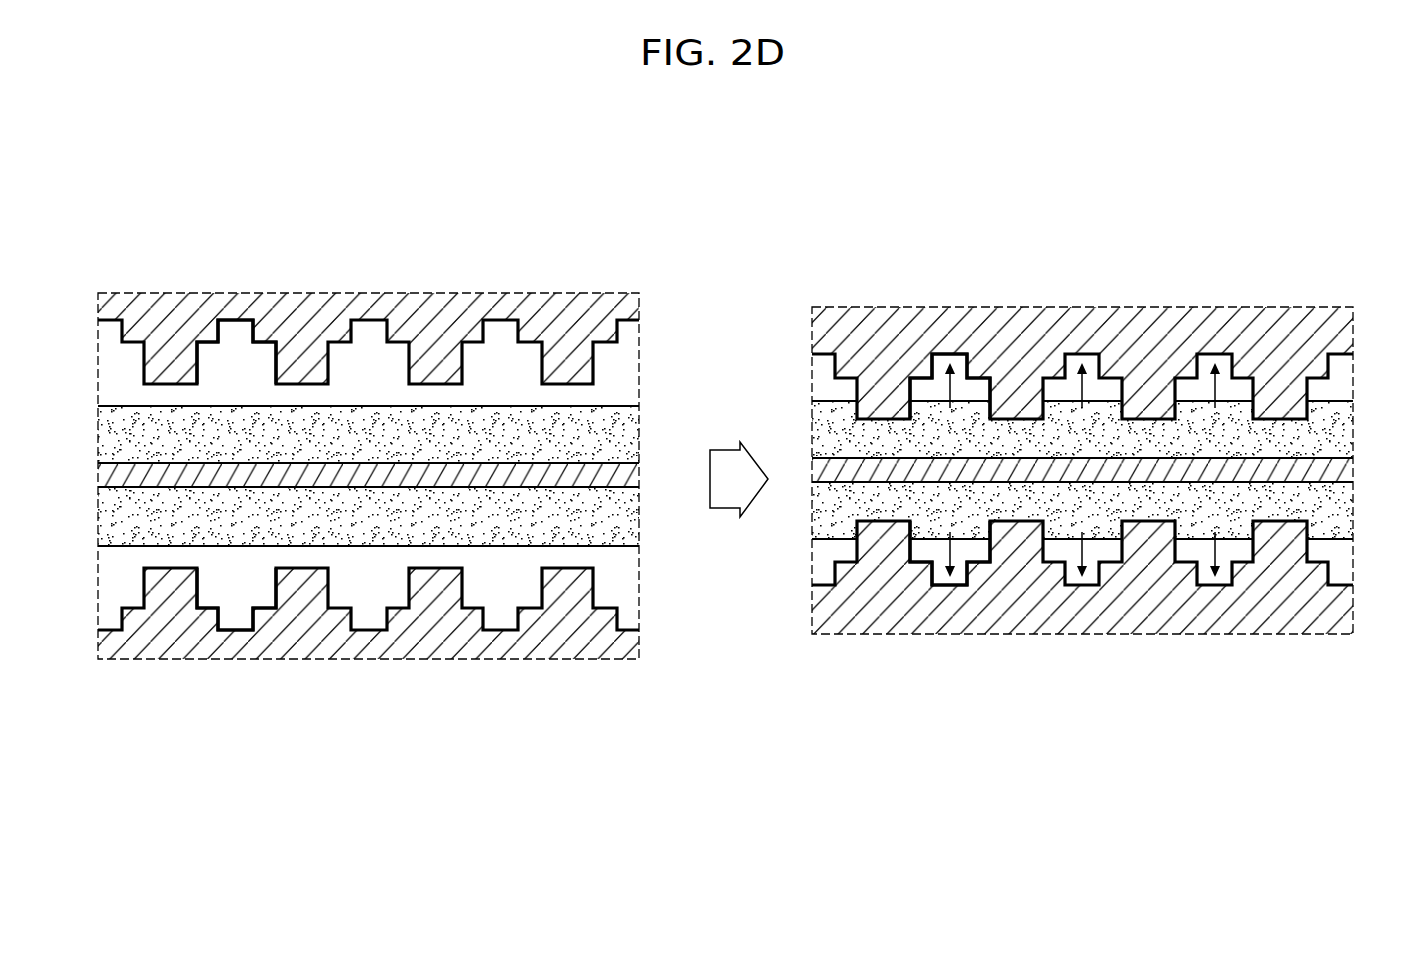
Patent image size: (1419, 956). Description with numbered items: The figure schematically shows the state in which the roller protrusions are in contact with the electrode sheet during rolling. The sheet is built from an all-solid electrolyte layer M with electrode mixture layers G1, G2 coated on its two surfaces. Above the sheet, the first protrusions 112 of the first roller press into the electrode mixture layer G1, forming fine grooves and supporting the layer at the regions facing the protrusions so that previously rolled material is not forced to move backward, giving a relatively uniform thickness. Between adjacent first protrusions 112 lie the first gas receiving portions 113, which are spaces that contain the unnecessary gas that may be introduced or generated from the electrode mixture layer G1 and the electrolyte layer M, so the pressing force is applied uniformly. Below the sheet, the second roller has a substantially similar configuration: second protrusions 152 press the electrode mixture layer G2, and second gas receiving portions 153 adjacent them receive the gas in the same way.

The first protrusion 112 is at (127, 377).
The first gas receiving portion 113 is at (238, 335).
The second protrusion 152 is at (127, 577).
The second gas receiving portion 153 is at (236, 617).
The electrode mixture layer G1 is at (628, 432).
The electrode mixture layer G2 is at (628, 524).
The all-solid electrolyte layer M is at (630, 479).
The element gas is at (1216, 388).